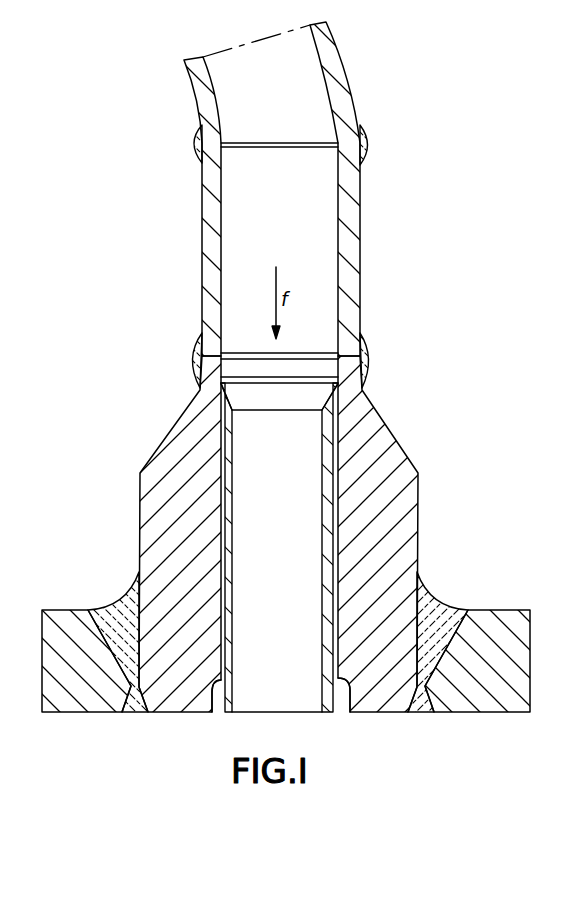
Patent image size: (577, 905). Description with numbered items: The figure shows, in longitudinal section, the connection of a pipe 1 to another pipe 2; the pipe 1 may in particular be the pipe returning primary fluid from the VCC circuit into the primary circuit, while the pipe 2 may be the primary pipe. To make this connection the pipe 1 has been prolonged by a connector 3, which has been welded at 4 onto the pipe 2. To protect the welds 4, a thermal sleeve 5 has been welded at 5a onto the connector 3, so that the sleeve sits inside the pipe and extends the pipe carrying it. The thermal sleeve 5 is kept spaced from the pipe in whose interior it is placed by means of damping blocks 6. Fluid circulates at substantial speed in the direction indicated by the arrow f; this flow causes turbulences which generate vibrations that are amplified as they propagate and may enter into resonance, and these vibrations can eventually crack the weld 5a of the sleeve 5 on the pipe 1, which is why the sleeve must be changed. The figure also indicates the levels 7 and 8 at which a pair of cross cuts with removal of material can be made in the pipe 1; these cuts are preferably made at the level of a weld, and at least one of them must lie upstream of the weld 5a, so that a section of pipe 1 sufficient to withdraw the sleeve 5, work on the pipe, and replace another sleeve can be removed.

The pipe 1 is at (348, 256).
The pipe 2 is at (65, 626).
The connector 3 is at (165, 466).
The welds 4 is at (110, 619).
The thermal sleeve 5 is at (232, 431).
The weld 5a is at (222, 402).
The damping blocks 6 is at (207, 701).
The level 7 is at (198, 356).
The level 8 is at (196, 144).